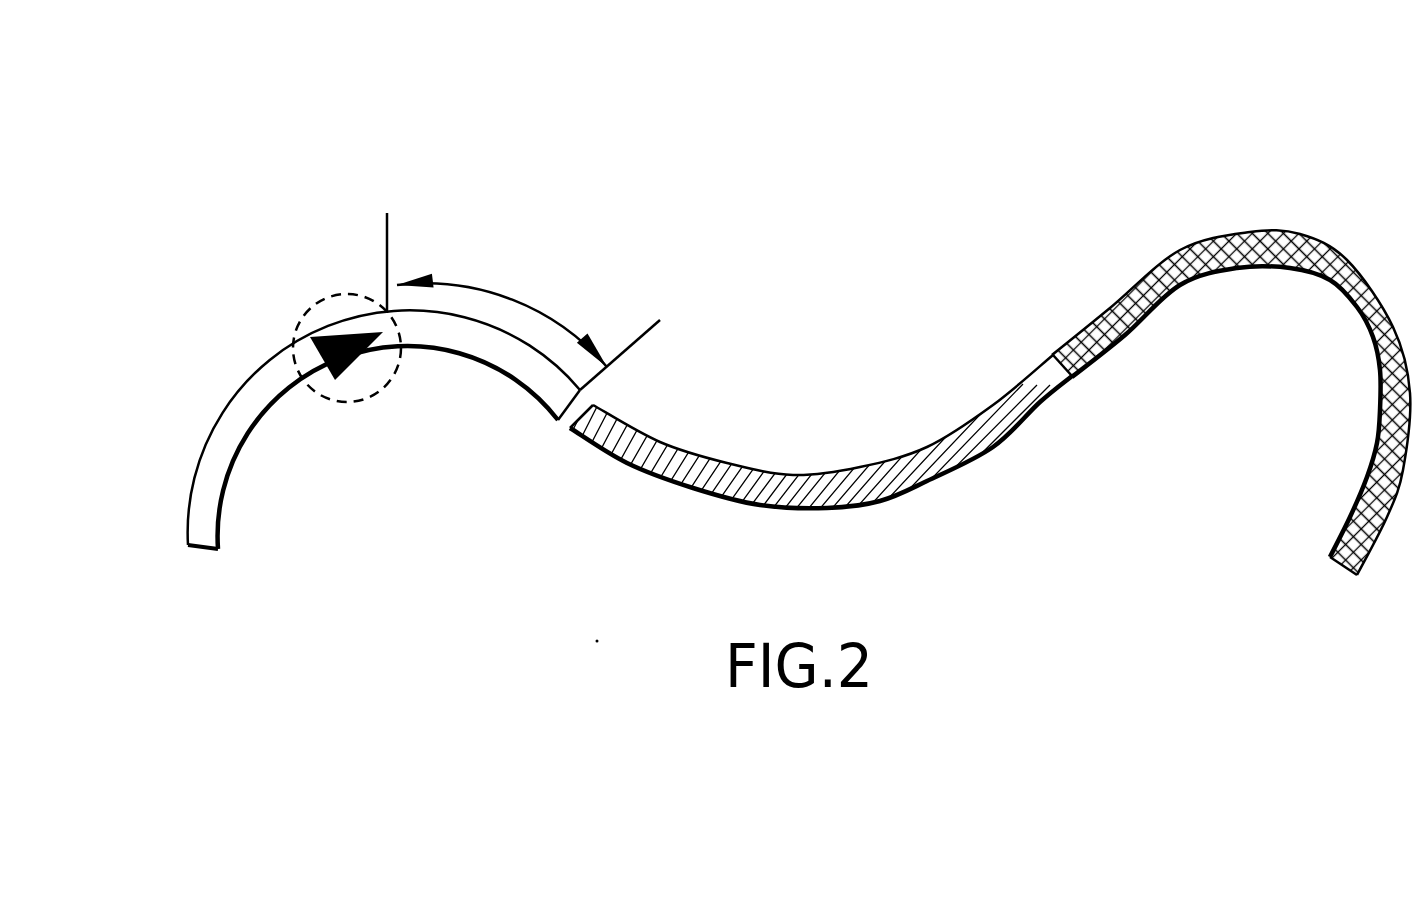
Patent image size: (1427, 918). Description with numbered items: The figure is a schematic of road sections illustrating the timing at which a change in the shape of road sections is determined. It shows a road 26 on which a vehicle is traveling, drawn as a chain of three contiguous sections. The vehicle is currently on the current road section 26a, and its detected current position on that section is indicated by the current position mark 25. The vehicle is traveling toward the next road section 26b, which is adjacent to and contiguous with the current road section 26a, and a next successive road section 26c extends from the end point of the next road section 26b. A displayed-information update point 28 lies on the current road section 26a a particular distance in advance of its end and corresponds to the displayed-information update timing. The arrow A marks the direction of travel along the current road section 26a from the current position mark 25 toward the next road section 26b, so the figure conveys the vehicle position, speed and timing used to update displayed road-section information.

The road 26 is at (1071, 197).
The current road section 26a is at (222, 415).
The next road section 26b is at (953, 428).
The next successive road section 26c is at (1271, 231).
The current position mark 25 is at (345, 403).
The displayed-information update point 28 is at (387, 228).
The direction arrow A is at (507, 297).